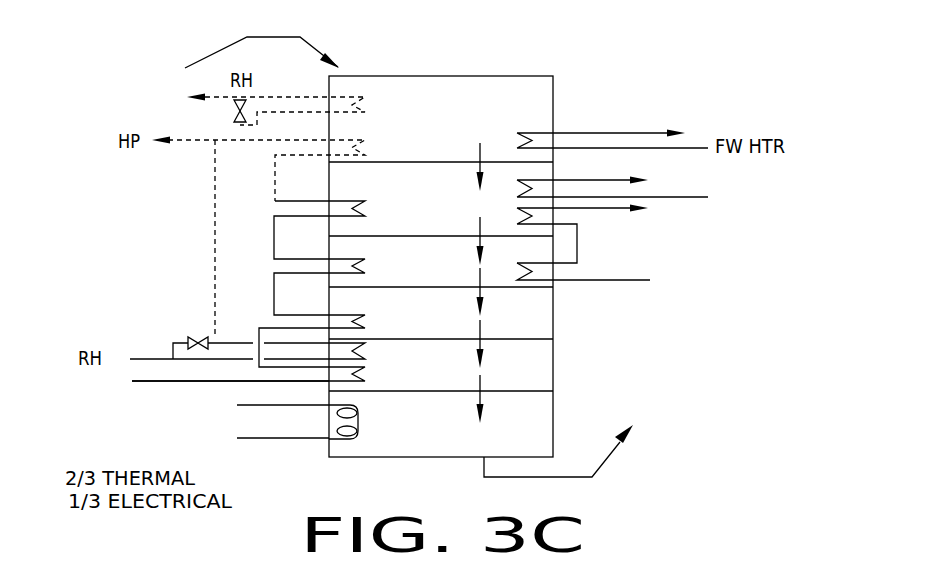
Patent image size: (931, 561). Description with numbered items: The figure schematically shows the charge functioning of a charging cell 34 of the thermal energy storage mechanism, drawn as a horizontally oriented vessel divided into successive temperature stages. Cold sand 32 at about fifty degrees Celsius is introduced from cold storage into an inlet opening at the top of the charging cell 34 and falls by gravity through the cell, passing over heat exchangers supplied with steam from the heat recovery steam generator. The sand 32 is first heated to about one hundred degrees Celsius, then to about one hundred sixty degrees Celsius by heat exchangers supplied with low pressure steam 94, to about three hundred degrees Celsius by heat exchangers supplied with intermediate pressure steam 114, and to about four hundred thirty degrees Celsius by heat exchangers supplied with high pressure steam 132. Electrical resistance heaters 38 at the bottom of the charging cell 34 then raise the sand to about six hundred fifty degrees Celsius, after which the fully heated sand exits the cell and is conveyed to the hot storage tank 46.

The sand 32 is at (310, 42).
The charging cell 34 is at (505, 75).
The electrical resistance heaters 38 is at (345, 442).
The hot storage tank 46 is at (690, 437).
The low pressure steam 94 is at (668, 197).
The intermediate pressure steam 114 is at (627, 281).
The high pressure steam 132 is at (153, 384).